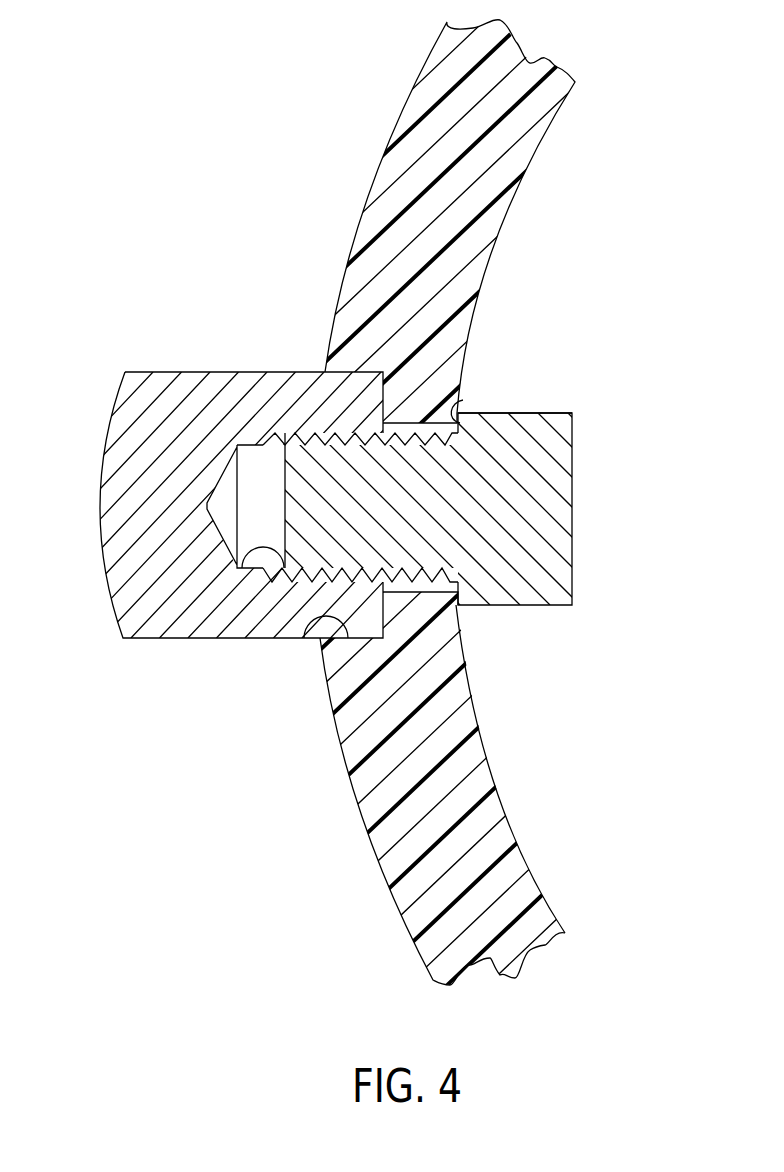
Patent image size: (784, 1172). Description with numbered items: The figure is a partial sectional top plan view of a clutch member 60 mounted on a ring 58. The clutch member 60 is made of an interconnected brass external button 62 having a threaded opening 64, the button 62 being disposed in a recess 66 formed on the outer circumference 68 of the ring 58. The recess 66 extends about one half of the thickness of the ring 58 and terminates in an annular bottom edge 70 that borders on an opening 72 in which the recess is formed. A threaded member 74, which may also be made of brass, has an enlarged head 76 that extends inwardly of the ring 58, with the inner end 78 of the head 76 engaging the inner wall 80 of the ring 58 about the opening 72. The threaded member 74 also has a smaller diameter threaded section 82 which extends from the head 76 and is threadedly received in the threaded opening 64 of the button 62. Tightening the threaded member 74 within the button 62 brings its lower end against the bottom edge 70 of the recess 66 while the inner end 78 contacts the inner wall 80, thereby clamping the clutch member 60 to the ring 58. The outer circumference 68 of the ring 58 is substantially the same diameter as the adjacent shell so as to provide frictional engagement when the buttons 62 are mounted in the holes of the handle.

The ring 58 is at (485, 243).
The clutch member 60 is at (577, 437).
The external button 62 is at (100, 516).
The threaded opening 64 is at (237, 560).
The recess 66 is at (304, 638).
The outer circumference 68 is at (370, 841).
The annular bottom edge 70 is at (382, 405).
The opening 72 is at (418, 583).
The threaded member 74 is at (573, 488).
The enlarged head 76 is at (543, 432).
The inner end 78 is at (463, 400).
The inner wall 80 is at (497, 787).
The threaded section 82 is at (317, 505).